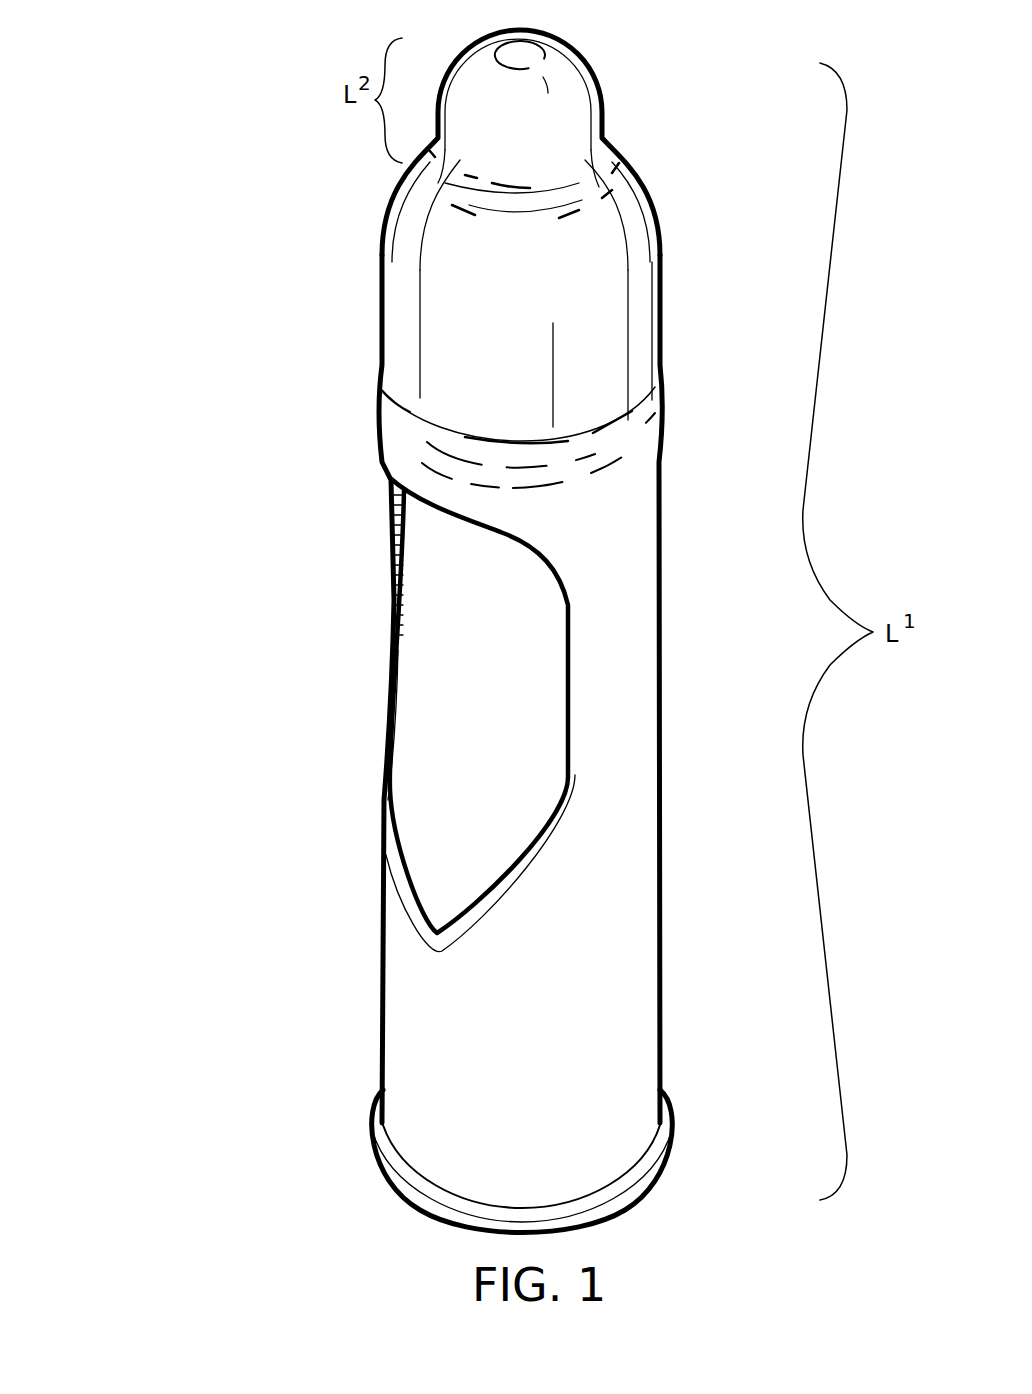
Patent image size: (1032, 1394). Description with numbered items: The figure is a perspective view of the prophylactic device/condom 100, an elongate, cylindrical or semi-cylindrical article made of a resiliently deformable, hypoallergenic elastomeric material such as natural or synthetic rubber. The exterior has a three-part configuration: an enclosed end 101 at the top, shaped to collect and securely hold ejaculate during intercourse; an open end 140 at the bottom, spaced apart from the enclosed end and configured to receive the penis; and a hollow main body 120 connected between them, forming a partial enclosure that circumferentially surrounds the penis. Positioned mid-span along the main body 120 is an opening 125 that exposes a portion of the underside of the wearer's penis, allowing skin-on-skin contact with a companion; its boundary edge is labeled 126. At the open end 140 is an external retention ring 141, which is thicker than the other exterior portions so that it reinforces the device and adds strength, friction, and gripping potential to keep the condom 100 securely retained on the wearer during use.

The prophylactic device/condom 100 is at (125, 147).
The enclosed end 101 is at (573, 85).
The main body 120 is at (643, 686).
The opening 125 is at (470, 634).
The edge of opening 126 is at (523, 868).
The open end 140 is at (387, 1167).
The external retention ring 141 is at (642, 1178).